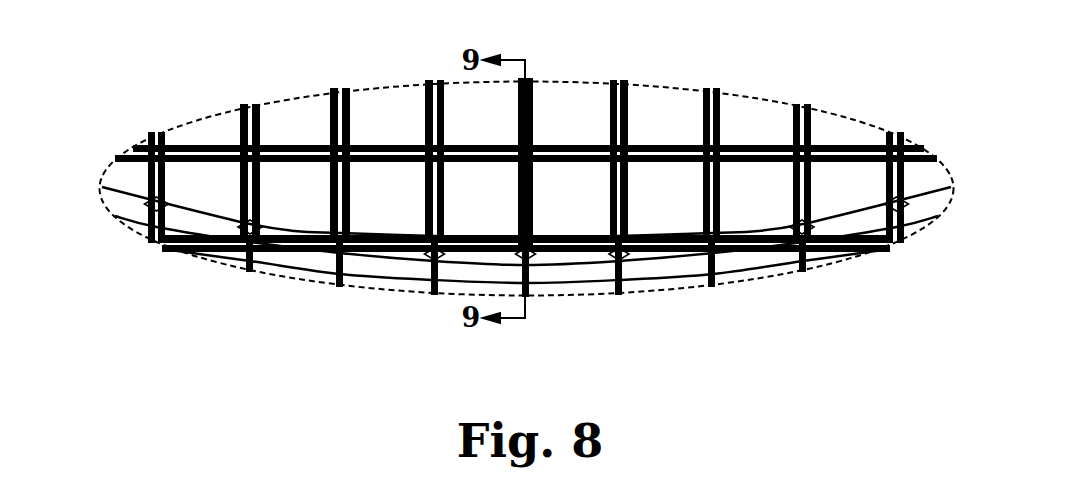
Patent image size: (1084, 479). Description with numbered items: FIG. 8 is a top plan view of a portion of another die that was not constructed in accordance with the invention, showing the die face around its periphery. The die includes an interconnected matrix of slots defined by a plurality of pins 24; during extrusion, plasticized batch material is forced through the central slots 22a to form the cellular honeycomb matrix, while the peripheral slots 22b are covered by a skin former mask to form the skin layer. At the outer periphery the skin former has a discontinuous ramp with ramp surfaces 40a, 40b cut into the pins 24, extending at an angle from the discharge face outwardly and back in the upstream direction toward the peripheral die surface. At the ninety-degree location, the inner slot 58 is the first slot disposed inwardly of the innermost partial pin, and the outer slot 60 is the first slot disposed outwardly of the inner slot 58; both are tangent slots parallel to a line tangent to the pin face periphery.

The central slots 22a is at (331, 125).
The peripheral slots 22b is at (618, 287).
The pins 24 is at (374, 108).
The inner slot 58 is at (500, 148).
The outer slot 60 is at (480, 242).
The ramp surface 40a is at (475, 255).
The ramp surface 40b is at (467, 263).